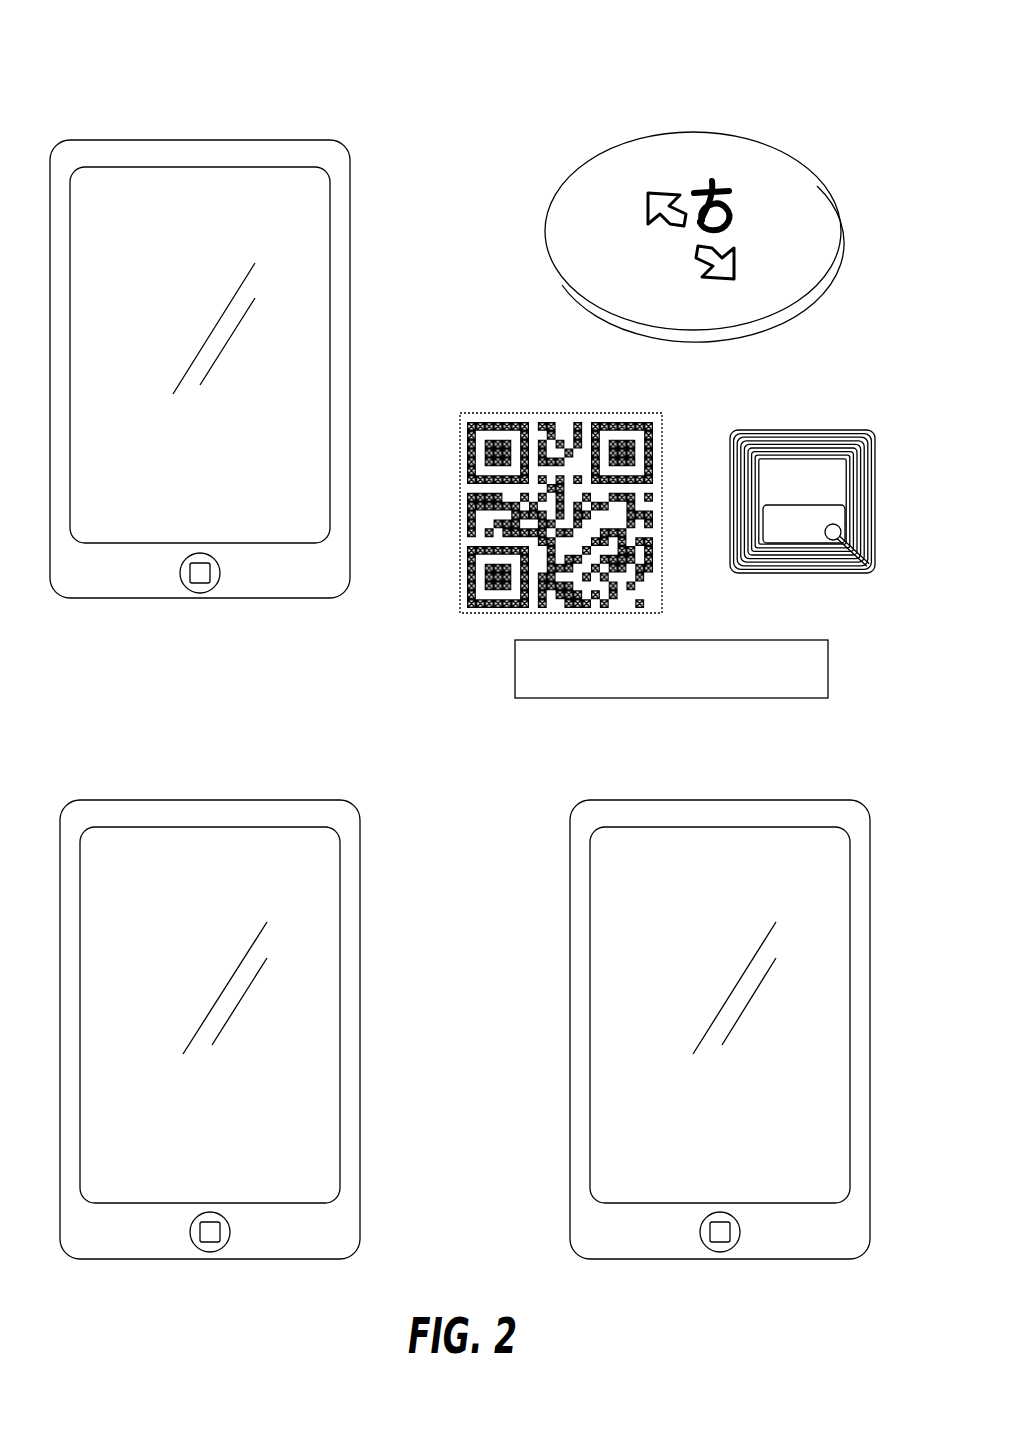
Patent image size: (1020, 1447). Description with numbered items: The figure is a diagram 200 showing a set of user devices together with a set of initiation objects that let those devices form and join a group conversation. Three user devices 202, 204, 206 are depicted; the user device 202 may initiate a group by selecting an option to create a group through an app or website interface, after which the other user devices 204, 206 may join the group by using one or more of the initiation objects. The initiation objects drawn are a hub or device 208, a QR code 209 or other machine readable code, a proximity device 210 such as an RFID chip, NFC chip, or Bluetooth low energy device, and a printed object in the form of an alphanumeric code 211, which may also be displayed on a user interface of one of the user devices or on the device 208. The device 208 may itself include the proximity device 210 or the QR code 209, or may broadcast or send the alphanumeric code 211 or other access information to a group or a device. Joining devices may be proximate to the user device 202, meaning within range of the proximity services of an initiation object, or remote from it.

The diagram 200 is at (608, 27).
The user device 202 is at (267, 140).
The user device 204 is at (255, 800).
The user device 206 is at (778, 801).
The hub or device 208 is at (703, 132).
The QR code 209 is at (558, 413).
The proximity device 210 is at (767, 430).
The alphanumeric code 211 is at (787, 640).